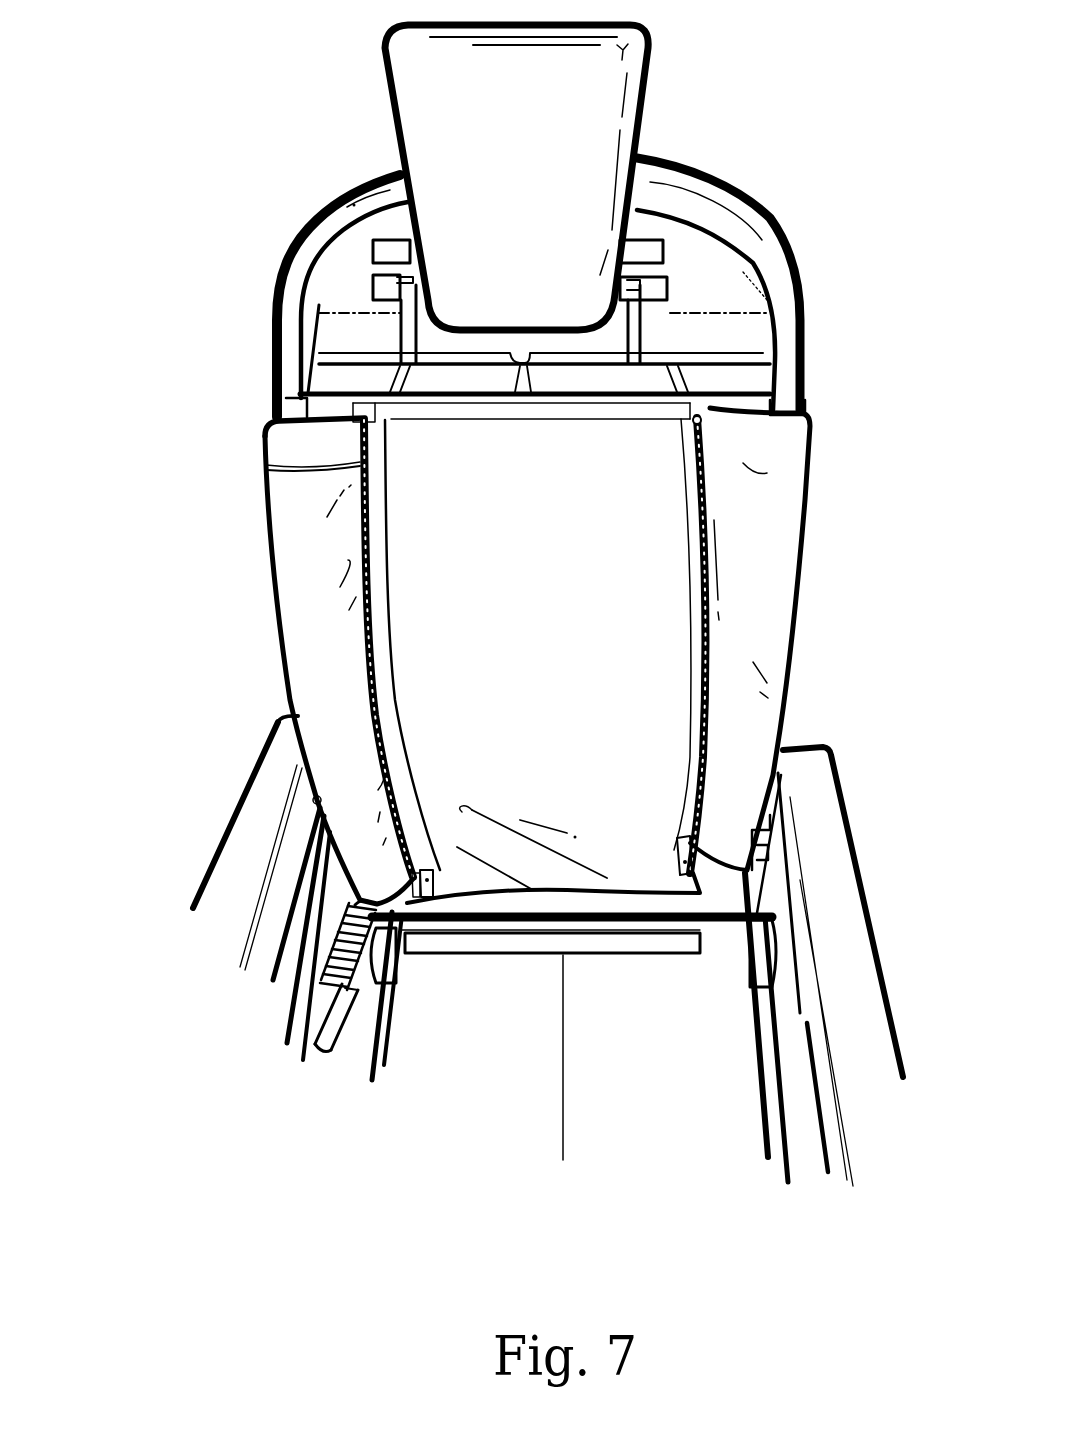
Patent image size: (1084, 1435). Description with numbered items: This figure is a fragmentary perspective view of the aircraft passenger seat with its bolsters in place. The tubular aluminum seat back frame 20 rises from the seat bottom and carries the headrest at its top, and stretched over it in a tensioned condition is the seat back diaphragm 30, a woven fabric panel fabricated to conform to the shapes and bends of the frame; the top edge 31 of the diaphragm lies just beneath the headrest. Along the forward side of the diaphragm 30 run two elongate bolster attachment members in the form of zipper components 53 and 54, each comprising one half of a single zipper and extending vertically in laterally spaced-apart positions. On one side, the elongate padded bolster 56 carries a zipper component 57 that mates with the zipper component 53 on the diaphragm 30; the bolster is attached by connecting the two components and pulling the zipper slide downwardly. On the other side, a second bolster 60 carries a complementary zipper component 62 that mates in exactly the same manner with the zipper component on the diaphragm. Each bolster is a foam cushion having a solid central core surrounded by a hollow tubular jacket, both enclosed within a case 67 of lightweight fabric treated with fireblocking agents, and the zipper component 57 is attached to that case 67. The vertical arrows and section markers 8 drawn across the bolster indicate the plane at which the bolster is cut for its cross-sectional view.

The seat back frame 20 is at (317, 250).
The top edge 31 is at (596, 135).
The seat back diaphragm 30 is at (550, 588).
The zipper component 54 is at (362, 445).
The zipper component 62 is at (267, 463).
The bolster 60 is at (288, 503).
The zipper component 57 is at (713, 532).
The padded bolster 56 is at (767, 613).
The zipper component 53 is at (722, 728).
The case 67 is at (313, 715).
The section line 8- 8 is at (240, 533).